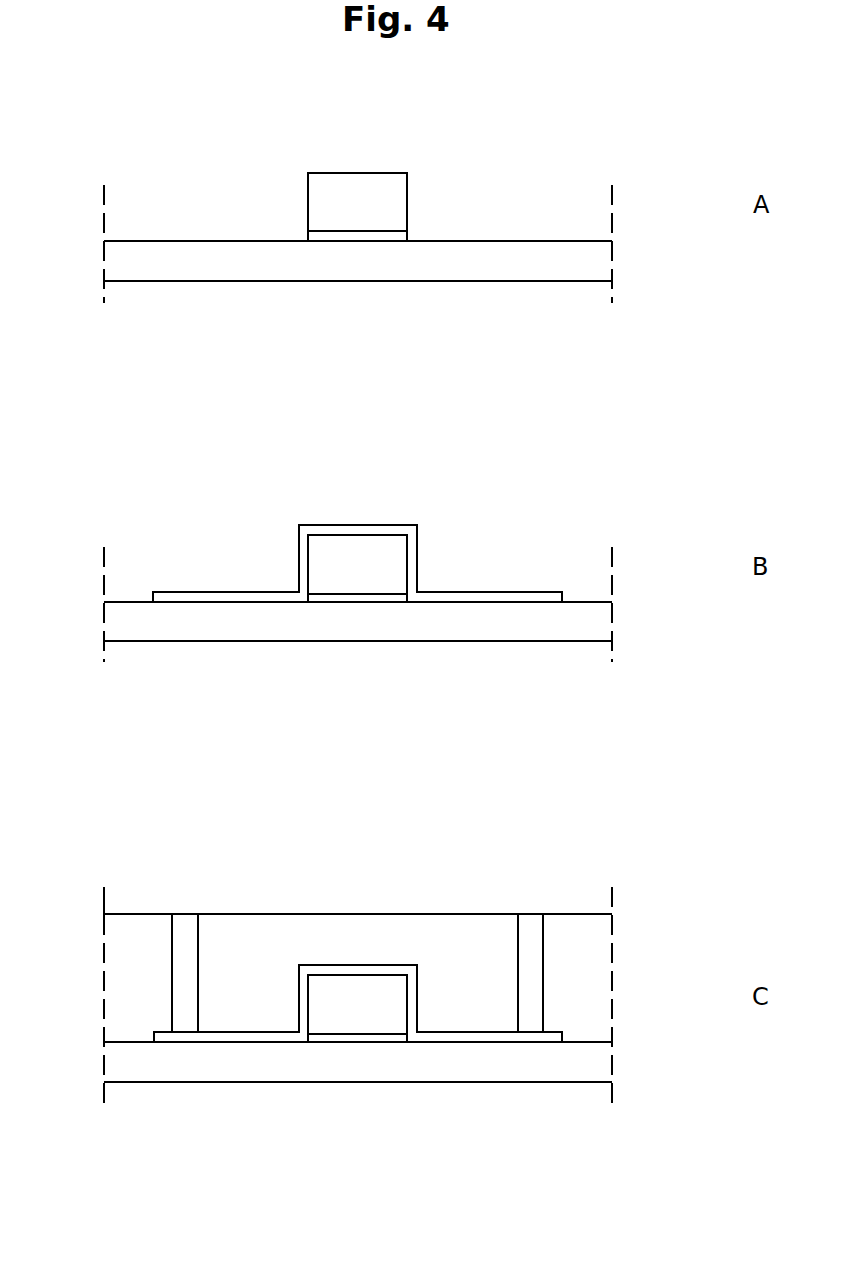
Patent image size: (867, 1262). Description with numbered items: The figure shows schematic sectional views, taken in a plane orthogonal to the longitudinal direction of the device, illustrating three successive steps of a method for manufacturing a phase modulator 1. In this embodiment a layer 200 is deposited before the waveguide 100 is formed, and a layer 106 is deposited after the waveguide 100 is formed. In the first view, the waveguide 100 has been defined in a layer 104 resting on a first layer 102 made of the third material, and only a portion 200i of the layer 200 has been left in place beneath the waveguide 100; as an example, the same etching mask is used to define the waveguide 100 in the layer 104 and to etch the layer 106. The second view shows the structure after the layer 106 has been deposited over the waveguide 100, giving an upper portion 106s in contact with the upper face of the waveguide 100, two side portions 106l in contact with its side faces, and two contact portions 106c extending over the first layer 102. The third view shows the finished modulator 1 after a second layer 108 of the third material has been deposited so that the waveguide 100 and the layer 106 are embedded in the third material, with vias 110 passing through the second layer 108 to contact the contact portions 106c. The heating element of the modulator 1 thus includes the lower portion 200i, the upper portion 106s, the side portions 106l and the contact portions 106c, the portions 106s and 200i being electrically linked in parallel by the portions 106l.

The modulator 1 is at (80, 890).
The waveguide 100 is at (383, 216).
The first layer 102 is at (593, 266).
The layer 104 is at (420, 181).
The layer 106 is at (580, 593).
The upper portion 106s is at (360, 526).
The side portions 106l is at (300, 545).
The contact portions 106c is at (252, 598).
The second layer 108 is at (592, 947).
The vias 110 is at (183, 914).
The layer 200 is at (424, 232).
The lower portion 200i is at (358, 237).